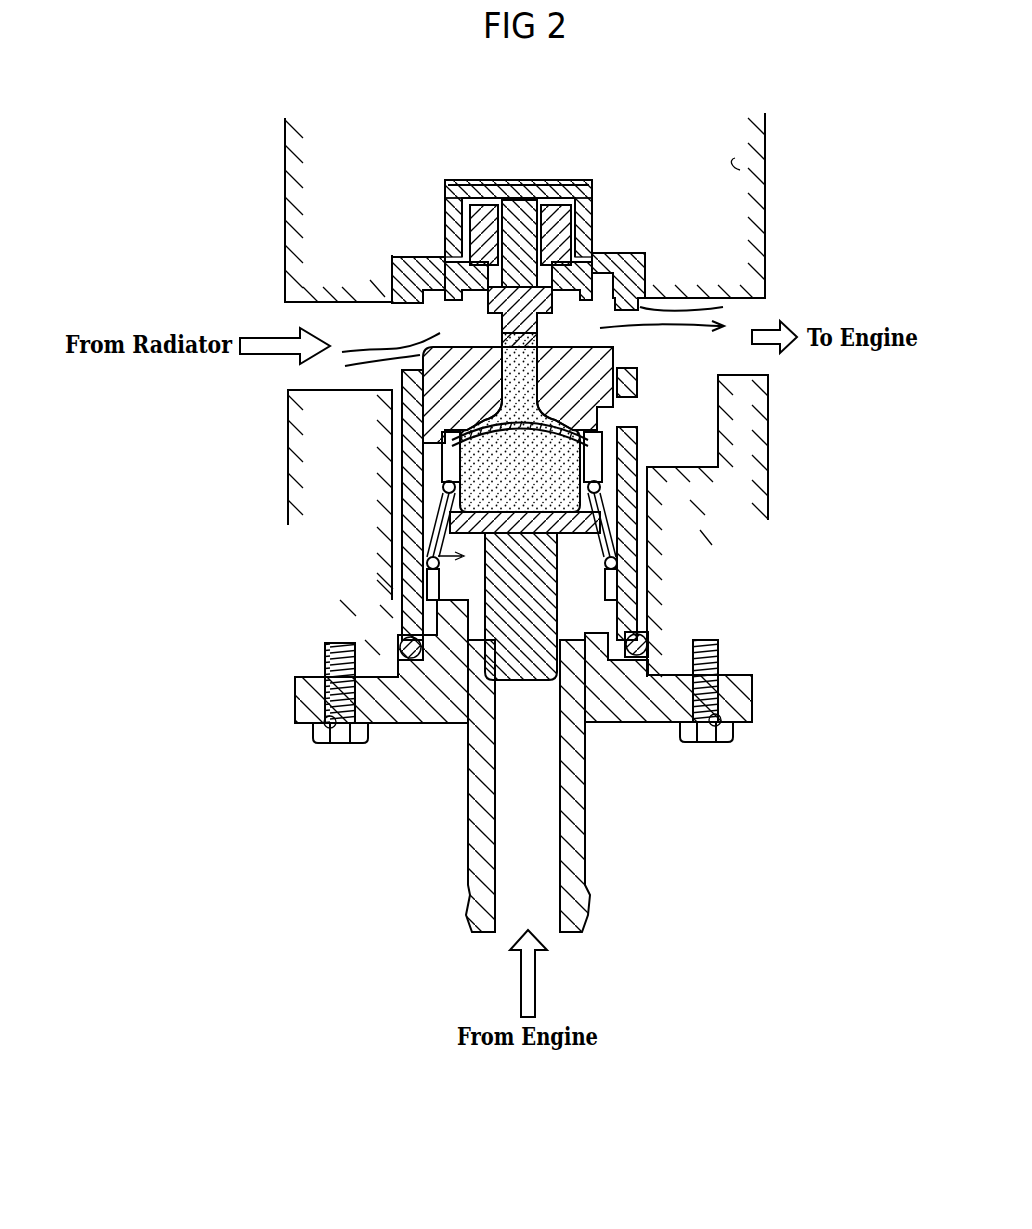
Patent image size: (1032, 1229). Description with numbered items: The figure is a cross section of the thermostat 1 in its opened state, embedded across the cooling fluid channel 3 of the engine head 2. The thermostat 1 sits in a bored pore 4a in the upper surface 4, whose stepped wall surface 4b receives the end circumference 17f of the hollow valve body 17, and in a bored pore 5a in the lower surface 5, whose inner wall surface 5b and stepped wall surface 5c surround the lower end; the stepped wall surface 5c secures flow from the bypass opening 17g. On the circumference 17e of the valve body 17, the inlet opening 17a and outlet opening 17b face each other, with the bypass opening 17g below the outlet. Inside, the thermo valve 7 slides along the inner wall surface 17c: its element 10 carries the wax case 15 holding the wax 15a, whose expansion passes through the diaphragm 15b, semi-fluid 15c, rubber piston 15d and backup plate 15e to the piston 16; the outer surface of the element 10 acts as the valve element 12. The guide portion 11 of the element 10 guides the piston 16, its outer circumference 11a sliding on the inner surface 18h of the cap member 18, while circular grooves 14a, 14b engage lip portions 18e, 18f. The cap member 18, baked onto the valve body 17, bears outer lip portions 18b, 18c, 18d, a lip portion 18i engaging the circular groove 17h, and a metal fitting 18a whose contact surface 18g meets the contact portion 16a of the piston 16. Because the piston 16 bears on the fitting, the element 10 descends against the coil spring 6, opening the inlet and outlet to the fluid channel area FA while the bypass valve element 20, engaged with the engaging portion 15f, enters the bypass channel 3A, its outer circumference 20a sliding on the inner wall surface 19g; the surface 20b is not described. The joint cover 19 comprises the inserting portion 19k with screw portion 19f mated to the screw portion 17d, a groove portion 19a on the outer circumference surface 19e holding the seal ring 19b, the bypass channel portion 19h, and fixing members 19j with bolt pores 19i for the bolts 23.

The thermostat 1 is at (370, 835).
The engine head 2 is at (290, 522).
The cooling fluid channel 3 is at (737, 327).
The bypass channel 3A is at (555, 822).
The upper surface 4 is at (300, 315).
The bored pore 4a is at (370, 297).
The stepped wall surface 4b is at (415, 262).
The lower surface 5 is at (300, 392).
The bored pore 5a is at (650, 600).
The inner wall surface 5b is at (420, 441).
The stepped wall surface 5c is at (680, 461).
The coil spring 6 is at (647, 525).
The thermo valve 7 is at (430, 575).
The element 10 is at (422, 367).
The guide portion 11 is at (445, 225).
The outer circumference 11a is at (590, 332).
The valve element 12 is at (640, 420).
The circular groove 14a is at (445, 262).
The circular groove 14b is at (495, 337).
The wax case 15 is at (440, 560).
The wax 15a is at (647, 509).
The diaphragm 15b is at (430, 480).
The semi-fluid 15c is at (430, 516).
The rubber piston 15d is at (460, 250).
The backup plate 15e is at (447, 232).
The engaging portion 15f is at (395, 588).
The piston 16 is at (520, 200).
The contact portion 16a is at (500, 195).
The valve body 17 is at (380, 287).
The inlet opening 17a is at (428, 331).
The outlet opening 17b is at (638, 383).
The inner wall surface 17c is at (647, 511).
The screw portion 17d is at (398, 648).
The circumference 17e is at (398, 598).
The end circumference 17f is at (570, 282).
The bypass opening 17g is at (640, 424).
The circular groove 17h is at (392, 283).
The cap member 18 is at (470, 178).
The metal fitting 18a is at (600, 185).
The lip portion 18b is at (565, 235).
The lip portion 18c is at (595, 292).
The lip portion 18d is at (650, 265).
The lip portion 18e is at (560, 255).
The lip portion 18f is at (673, 298).
The contact surface 18g is at (580, 185).
The inner surface 18h is at (556, 178).
The lip portion 18i is at (640, 282).
The joint cover 19 is at (700, 748).
The groove portion 19a is at (440, 730).
The seal ring 19b is at (392, 735).
The outer circumference surface 19e is at (728, 658).
The screw portion 19f is at (700, 622).
The inner wall surface 19g is at (470, 820).
The bypass channel portion 19h is at (470, 885).
The bolt pore 19i is at (320, 728).
The fixing member 19j is at (305, 692).
The inserting portion 19k is at (632, 715).
The bypass valve element 20 is at (300, 690).
The outer circumference 20a is at (575, 700).
The mounting flange portion 20b is at (647, 572).
The bolt 23 is at (348, 745).
The fluid channel area FA is at (768, 288).